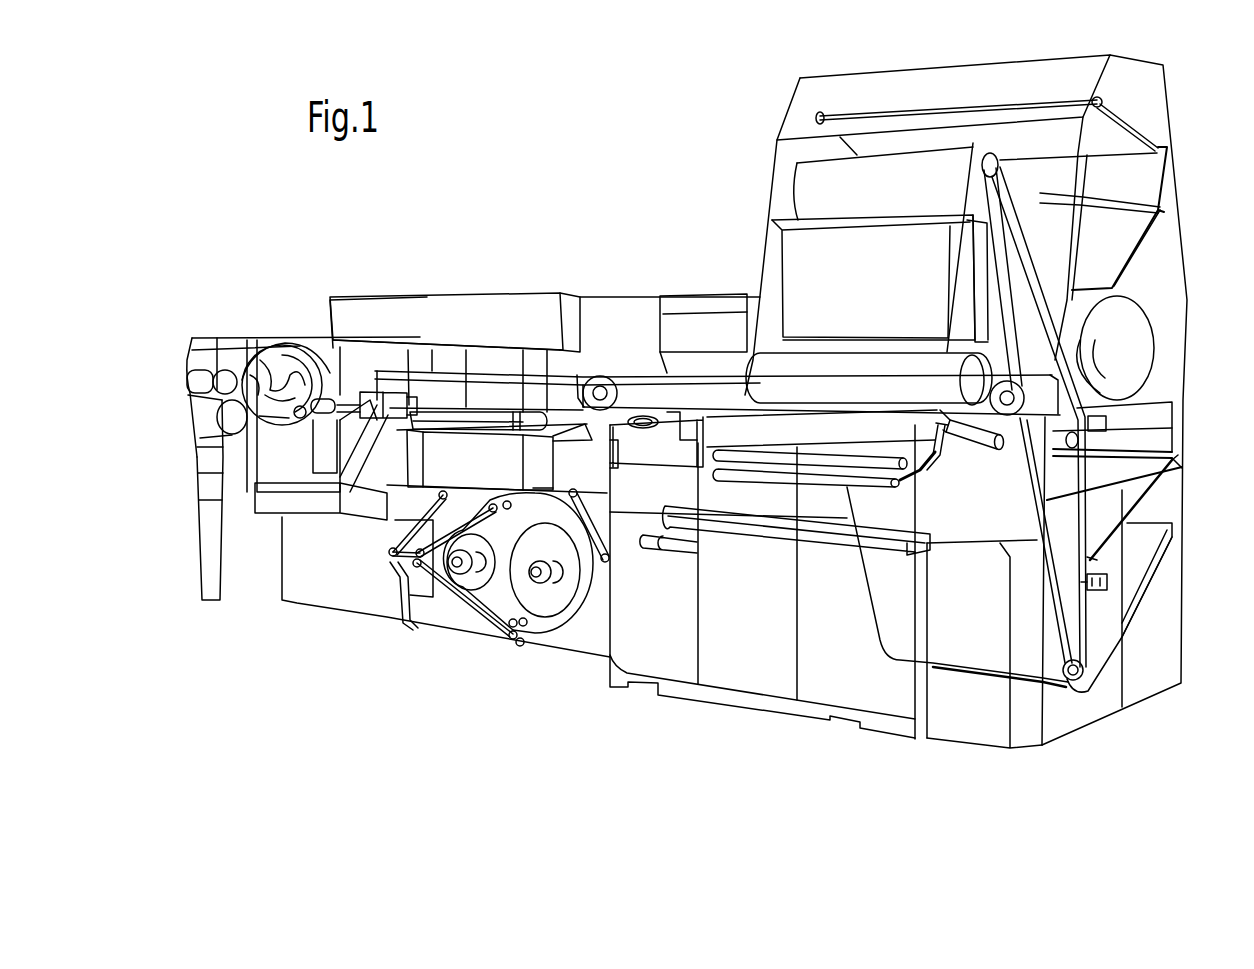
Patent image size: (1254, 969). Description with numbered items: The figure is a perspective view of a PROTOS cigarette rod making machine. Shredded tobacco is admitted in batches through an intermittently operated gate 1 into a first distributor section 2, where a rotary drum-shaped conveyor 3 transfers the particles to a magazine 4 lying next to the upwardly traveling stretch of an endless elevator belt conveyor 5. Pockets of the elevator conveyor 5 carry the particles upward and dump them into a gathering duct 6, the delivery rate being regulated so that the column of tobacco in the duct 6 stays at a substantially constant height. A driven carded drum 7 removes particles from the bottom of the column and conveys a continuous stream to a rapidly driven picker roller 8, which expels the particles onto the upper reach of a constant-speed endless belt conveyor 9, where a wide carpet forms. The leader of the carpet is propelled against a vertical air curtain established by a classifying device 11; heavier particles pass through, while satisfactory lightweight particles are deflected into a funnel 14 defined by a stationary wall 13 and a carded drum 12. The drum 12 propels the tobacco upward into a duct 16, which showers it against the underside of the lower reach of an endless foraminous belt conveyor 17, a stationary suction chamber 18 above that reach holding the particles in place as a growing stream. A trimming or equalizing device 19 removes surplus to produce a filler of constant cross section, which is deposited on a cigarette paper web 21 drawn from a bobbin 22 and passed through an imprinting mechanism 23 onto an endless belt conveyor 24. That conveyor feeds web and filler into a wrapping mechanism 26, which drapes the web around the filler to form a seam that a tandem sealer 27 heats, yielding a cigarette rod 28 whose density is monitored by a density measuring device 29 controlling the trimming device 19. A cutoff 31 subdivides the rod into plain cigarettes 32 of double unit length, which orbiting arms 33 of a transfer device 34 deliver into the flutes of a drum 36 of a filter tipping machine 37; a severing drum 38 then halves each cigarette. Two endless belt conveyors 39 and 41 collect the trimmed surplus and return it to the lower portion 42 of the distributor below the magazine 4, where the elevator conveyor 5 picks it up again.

The gate 1 is at (1143, 108).
The first distributor section 2 is at (1125, 282).
The rotary drum-shaped conveyor 3 is at (1130, 335).
The magazine 4 is at (1125, 489).
The endless elevator belt conveyor 5 is at (1073, 607).
The gathering duct 6 is at (797, 272).
The driven carded drum 7 is at (947, 365).
The picker roller 8 is at (1012, 383).
The endless belt conveyor 9 is at (967, 430).
The classifying device 11 is at (857, 396).
The carded drum 12 is at (884, 467).
The stationary wall 13 is at (925, 470).
The funnel 14 is at (935, 447).
The duct 16 is at (817, 447).
The endless foraminous belt conveyor 17 is at (700, 380).
The stationary suction chamber 18 is at (641, 390).
The trimming or equalizing device 19 is at (651, 428).
The cigarette paper web 21 is at (608, 453).
The bobbin 22 is at (470, 580).
The imprinting mechanism 23 is at (511, 479).
The endless belt conveyor 24 is at (571, 433).
The wrapping mechanism 26 is at (483, 436).
The tandem sealer 27 is at (497, 393).
The cigarette rod 28 is at (392, 420).
The density measuring device 29 is at (390, 397).
The cutoff 31 is at (348, 357).
The plain cigarettes 32 is at (297, 420).
The orbiting arms 33 is at (277, 340).
The transfer device 34 is at (289, 327).
The drum 36 is at (207, 373).
The filter tipping machine 37 is at (217, 550).
The severing drum 38 is at (228, 422).
The endless belt conveyor 39 is at (767, 545).
The endless belt conveyor 41 is at (716, 553).
The lower portion of the distributor 42 is at (1142, 582).